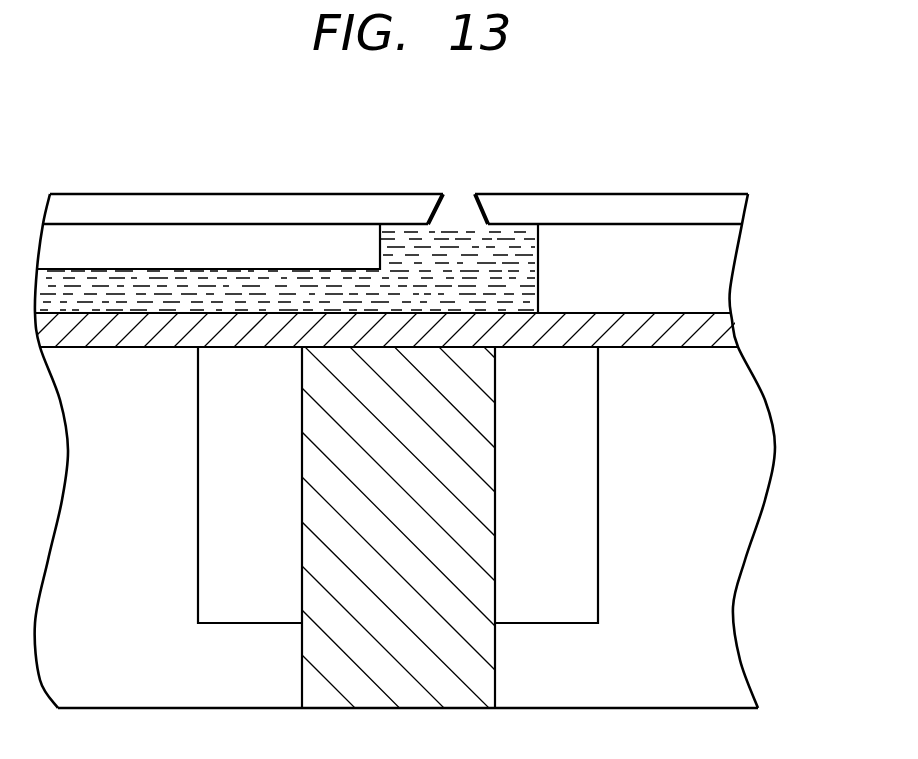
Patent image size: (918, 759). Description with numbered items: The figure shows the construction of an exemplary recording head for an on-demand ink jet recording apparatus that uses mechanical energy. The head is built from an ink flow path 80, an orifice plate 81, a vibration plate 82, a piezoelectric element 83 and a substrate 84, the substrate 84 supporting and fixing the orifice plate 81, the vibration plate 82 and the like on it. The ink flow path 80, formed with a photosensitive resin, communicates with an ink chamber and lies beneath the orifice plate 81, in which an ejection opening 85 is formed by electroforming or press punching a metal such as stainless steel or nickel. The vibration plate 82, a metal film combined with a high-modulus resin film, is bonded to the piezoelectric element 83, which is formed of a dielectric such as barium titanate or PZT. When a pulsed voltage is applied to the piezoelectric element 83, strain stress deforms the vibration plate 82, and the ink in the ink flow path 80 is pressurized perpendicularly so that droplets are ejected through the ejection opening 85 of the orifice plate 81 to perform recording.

The ink flow path 80 is at (210, 235).
The orifice plate 81 is at (613, 202).
The vibration plate 82 is at (707, 328).
The piezoelectric element 83 is at (480, 672).
The substrate 84 is at (590, 440).
The ejection opening 85 is at (465, 207).